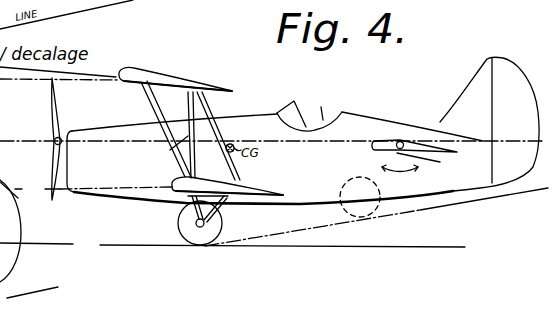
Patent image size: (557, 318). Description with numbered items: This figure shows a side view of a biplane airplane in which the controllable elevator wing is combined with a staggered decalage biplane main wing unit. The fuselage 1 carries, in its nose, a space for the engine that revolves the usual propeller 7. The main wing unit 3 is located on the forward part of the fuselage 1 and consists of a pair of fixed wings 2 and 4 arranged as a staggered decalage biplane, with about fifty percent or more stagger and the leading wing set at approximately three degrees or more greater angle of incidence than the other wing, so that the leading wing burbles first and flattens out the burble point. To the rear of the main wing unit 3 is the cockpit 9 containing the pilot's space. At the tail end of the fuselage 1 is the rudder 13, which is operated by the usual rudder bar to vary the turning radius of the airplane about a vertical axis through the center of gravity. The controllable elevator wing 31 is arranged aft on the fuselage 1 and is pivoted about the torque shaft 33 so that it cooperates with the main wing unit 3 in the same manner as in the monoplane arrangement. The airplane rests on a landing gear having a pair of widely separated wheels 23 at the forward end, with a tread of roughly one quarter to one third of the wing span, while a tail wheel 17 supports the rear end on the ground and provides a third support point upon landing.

The fuselage 1 is at (113, 130).
The fixed wing 2 is at (155, 74).
The main wing unit 3 is at (168, 151).
The fixed wing 4 is at (165, 193).
The propeller 7 is at (45, 110).
The cockpit 9 is at (309, 107).
The rudder 13 is at (502, 88).
The tail wheel 17 is at (364, 208).
The wheels 23 is at (219, 222).
The controllable elevator wing 31 is at (391, 140).
The torque shaft 33 is at (424, 166).